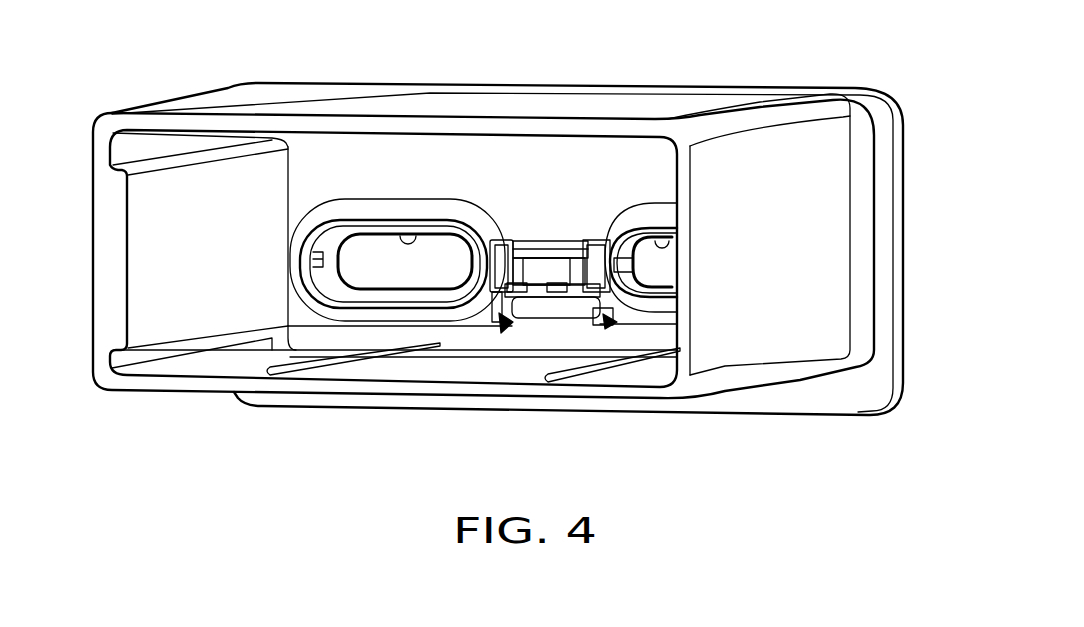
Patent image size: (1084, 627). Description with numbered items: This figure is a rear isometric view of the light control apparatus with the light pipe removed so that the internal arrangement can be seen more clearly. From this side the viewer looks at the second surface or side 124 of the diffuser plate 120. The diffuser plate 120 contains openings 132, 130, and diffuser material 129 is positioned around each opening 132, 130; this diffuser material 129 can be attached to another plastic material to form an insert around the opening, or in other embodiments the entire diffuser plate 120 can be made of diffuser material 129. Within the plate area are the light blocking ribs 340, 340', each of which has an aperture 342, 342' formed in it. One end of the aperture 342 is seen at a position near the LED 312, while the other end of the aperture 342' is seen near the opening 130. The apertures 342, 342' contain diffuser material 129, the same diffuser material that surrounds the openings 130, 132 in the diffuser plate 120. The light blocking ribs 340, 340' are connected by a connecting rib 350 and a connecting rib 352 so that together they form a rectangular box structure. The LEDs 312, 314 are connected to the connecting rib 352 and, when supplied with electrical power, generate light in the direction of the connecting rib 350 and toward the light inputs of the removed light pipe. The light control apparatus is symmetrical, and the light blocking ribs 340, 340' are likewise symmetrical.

The diffuser plate 120 is at (443, 212).
The second surface or side 124 is at (307, 192).
The diffuser material 129 is at (552, 238).
The opening 130 is at (653, 233).
The opening 132 is at (422, 226).
The LED 312 is at (520, 300).
The LED 314 is at (493, 290).
The light blocking rib 340 is at (395, 348).
The light blocking rib 340' is at (674, 352).
The aperture 342 is at (462, 359).
The aperture 342' is at (644, 171).
The connecting rib 350 is at (515, 238).
The connecting rib 352 is at (555, 314).